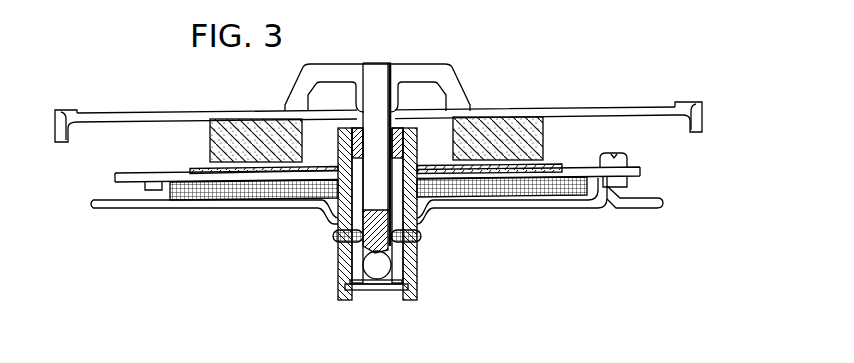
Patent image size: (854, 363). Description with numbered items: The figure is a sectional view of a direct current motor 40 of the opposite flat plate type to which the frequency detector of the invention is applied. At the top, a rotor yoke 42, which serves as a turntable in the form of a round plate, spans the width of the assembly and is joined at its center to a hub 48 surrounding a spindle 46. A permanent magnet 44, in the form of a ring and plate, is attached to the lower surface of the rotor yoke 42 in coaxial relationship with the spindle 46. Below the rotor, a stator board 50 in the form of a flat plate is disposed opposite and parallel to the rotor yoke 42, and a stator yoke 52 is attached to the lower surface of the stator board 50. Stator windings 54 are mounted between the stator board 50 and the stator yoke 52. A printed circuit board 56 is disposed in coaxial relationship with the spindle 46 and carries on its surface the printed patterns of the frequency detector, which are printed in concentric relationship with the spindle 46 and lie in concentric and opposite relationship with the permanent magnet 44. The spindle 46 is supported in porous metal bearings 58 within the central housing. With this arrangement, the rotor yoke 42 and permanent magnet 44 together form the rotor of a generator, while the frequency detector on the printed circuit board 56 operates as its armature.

The direct current motor 40 is at (248, 90).
The rotor yoke 42 is at (620, 107).
The permanent magnet 44 is at (517, 116).
The spindle 46 is at (381, 72).
The hub 48 is at (452, 72).
The stator board 50 is at (637, 168).
The stator yoke 52 is at (557, 207).
The stator windings 54 is at (517, 198).
The printed circuit board 56 is at (558, 165).
The porous metal bearings 58 is at (355, 258).